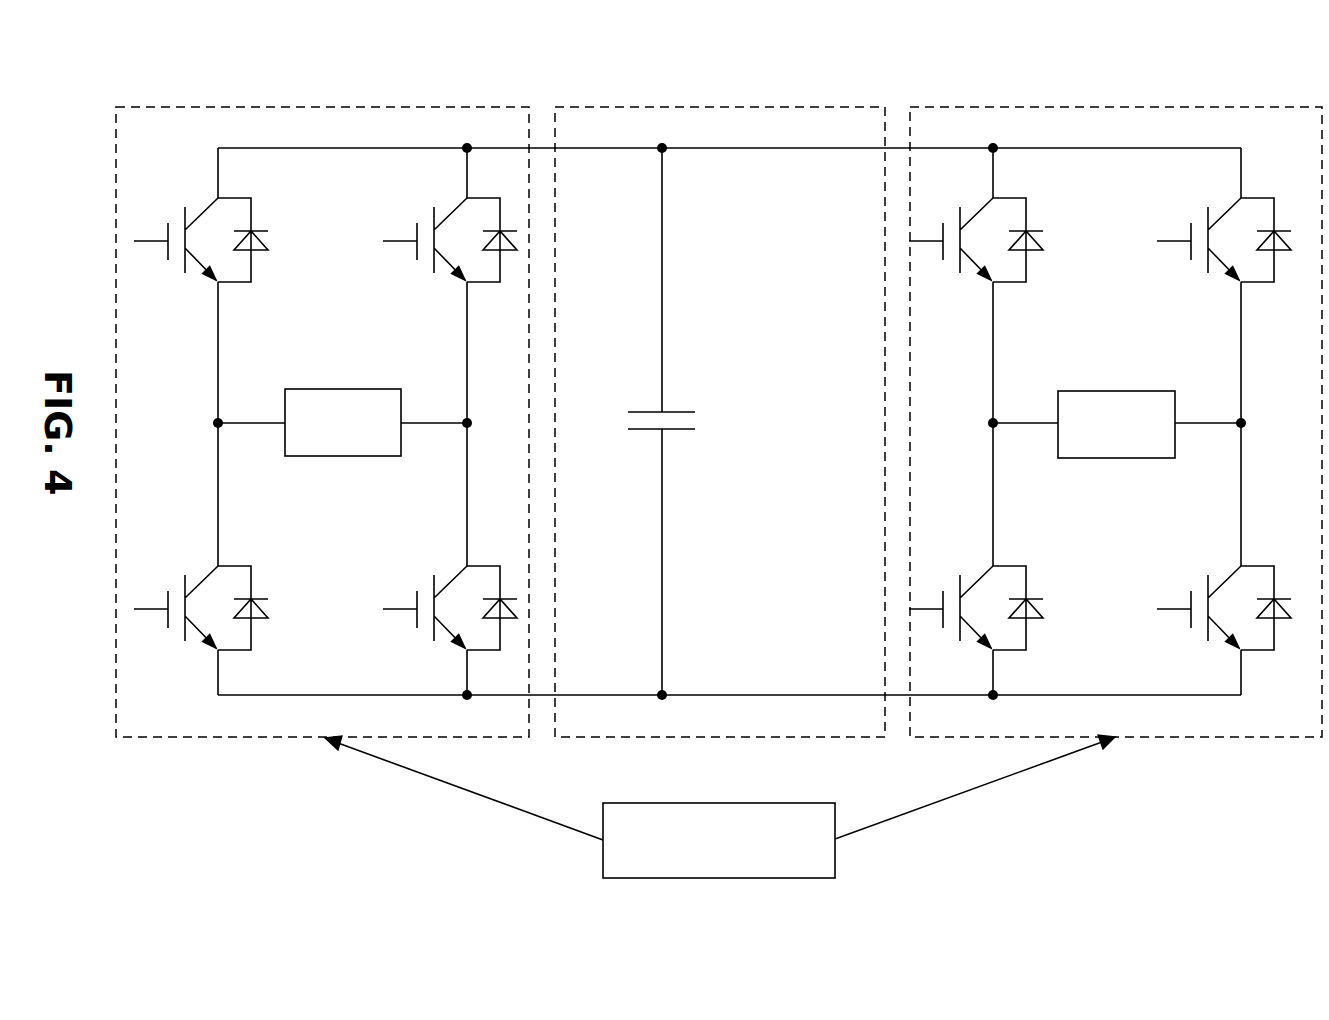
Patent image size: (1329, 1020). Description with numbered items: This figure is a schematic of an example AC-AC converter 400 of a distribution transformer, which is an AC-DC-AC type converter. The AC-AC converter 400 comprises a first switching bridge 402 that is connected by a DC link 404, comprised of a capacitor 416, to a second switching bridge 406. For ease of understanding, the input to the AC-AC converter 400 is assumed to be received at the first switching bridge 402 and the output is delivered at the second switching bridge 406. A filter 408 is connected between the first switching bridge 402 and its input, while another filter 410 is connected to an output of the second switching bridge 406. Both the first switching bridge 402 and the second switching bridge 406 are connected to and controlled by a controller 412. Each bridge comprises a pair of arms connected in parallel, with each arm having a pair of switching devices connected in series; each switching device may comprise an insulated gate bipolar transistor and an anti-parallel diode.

The AC-AC converter 400 is at (130, 62).
The first switching bridge 402 is at (322, 107).
The DC link 404 is at (718, 107).
The second switching bridge 406 is at (1116, 107).
The filter 408 is at (347, 388).
The filter 410 is at (1118, 391).
The controller 412 is at (718, 803).
The capacitor 416 is at (651, 411).